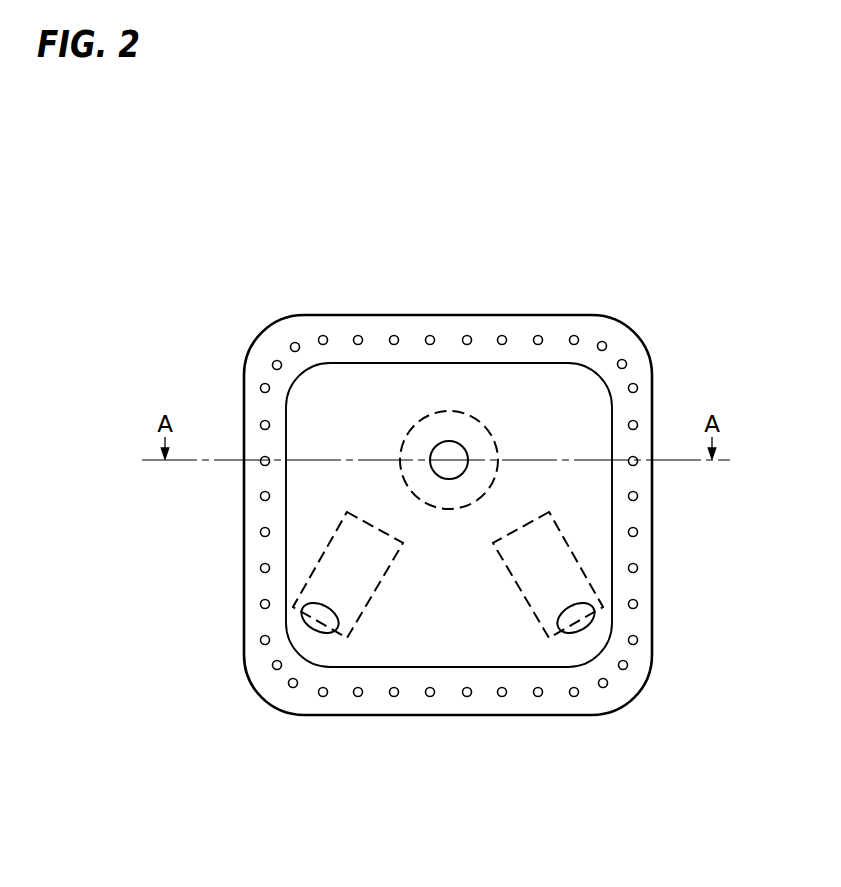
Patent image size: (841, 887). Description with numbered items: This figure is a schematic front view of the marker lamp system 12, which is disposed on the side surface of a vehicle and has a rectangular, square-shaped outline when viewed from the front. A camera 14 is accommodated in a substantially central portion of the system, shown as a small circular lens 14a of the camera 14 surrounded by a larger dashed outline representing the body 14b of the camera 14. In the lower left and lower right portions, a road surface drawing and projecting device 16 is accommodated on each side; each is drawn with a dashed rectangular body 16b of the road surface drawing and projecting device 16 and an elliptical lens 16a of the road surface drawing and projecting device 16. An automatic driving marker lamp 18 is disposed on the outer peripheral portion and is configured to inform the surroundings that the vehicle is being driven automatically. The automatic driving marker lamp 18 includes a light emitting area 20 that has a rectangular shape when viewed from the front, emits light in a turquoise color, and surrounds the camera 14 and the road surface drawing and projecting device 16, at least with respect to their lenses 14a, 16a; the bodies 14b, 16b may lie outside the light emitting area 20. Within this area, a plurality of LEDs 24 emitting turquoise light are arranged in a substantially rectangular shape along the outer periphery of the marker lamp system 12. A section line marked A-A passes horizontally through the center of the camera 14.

The marker lamp system 12 is at (246, 257).
The camera 14 is at (450, 403).
The lens of the camera 14a is at (458, 450).
The body of the camera 14b is at (417, 424).
The road surface drawing and projecting device 16 is at (380, 597).
The lens of the road surface drawing and projecting device 16a is at (315, 627).
The body of the road surface drawing and projecting device 16b is at (337, 525).
The automatic driving marker lamp 18 is at (626, 314).
The light emitting area 20 is at (404, 328).
The LEDs 24 is at (261, 567).